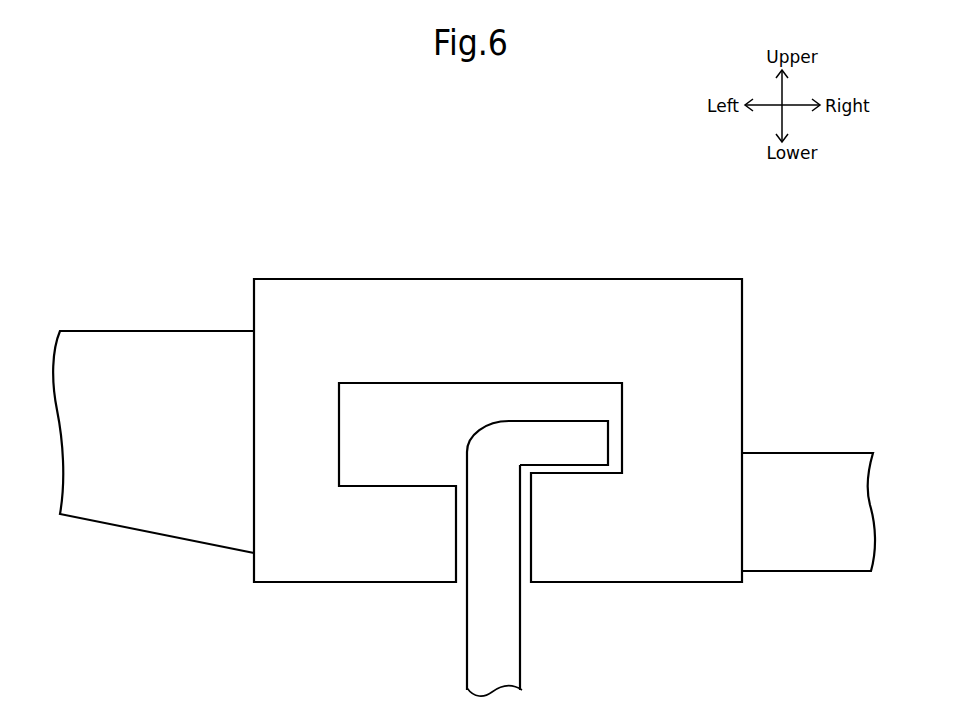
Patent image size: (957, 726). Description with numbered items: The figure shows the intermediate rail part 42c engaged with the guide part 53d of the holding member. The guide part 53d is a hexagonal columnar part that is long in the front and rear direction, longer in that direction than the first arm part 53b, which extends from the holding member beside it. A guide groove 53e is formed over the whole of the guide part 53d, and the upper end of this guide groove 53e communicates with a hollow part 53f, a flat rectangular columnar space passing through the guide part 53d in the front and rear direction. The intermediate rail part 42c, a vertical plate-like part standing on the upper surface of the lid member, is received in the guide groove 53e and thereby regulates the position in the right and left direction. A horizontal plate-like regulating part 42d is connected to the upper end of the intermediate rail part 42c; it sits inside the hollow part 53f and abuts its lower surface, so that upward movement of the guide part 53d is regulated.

The guide part 53d is at (322, 274).
The first arm part 53b is at (176, 549).
The hollow part 53f is at (392, 441).
The guide groove 53e is at (531, 535).
The intermediate rail part 42c is at (467, 602).
The regulating part 42d is at (570, 466).